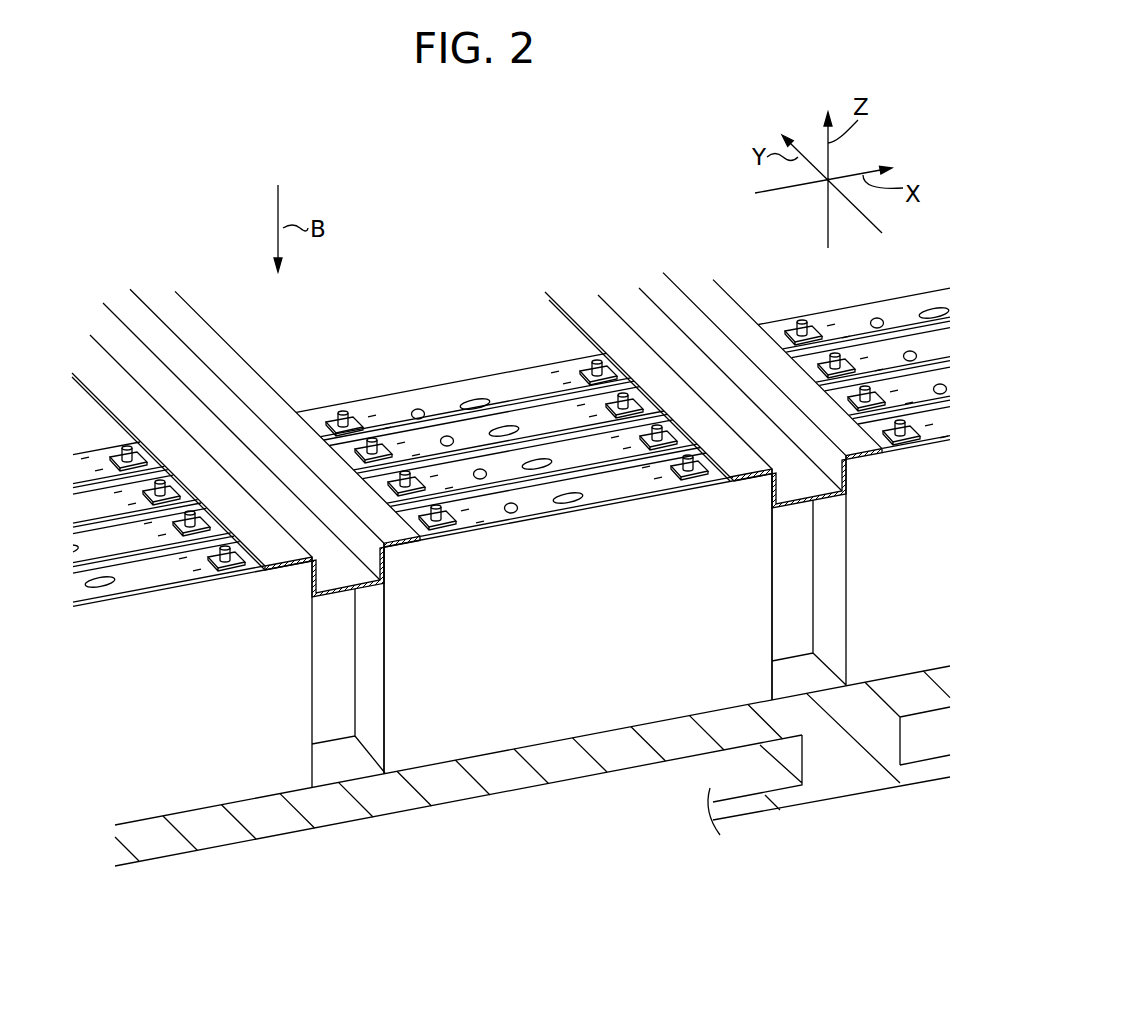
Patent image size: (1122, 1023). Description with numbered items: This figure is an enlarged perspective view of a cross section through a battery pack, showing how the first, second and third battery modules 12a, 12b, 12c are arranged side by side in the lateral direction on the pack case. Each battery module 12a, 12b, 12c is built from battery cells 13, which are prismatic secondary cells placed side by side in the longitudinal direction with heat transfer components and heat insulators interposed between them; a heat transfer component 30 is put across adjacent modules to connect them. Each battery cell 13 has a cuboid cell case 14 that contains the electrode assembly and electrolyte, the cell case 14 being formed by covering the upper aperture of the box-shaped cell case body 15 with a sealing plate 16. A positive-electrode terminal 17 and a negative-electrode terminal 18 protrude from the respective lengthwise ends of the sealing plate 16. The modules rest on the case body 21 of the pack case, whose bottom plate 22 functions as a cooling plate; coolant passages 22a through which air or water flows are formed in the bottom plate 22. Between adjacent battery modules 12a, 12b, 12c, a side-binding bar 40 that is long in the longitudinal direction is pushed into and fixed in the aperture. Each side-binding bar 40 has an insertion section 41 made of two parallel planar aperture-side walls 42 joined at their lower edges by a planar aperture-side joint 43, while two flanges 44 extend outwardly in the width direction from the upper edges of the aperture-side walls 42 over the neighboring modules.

The first battery module 12a is at (163, 662).
The second battery module 12b is at (513, 427).
The third battery module 12c is at (900, 307).
The battery cell 13 is at (534, 522).
The cell case 14 is at (534, 522).
The cell case body 15 is at (518, 557).
The sealing plate 16 is at (598, 490).
The positive-electrode terminal 17 is at (442, 534).
The negative-electrode terminal 18 is at (693, 480).
The case body 21 is at (557, 800).
The bottom plate 22 is at (618, 762).
The coolant passage 22a is at (742, 785).
The heat transfer component 30 is at (335, 640).
The side-binding bar 40 is at (477, 452).
The insertion section 41 is at (345, 578).
The aperture-side wall 42 is at (260, 438).
The aperture-side joint 43 is at (232, 450).
The flange 44 is at (108, 368).